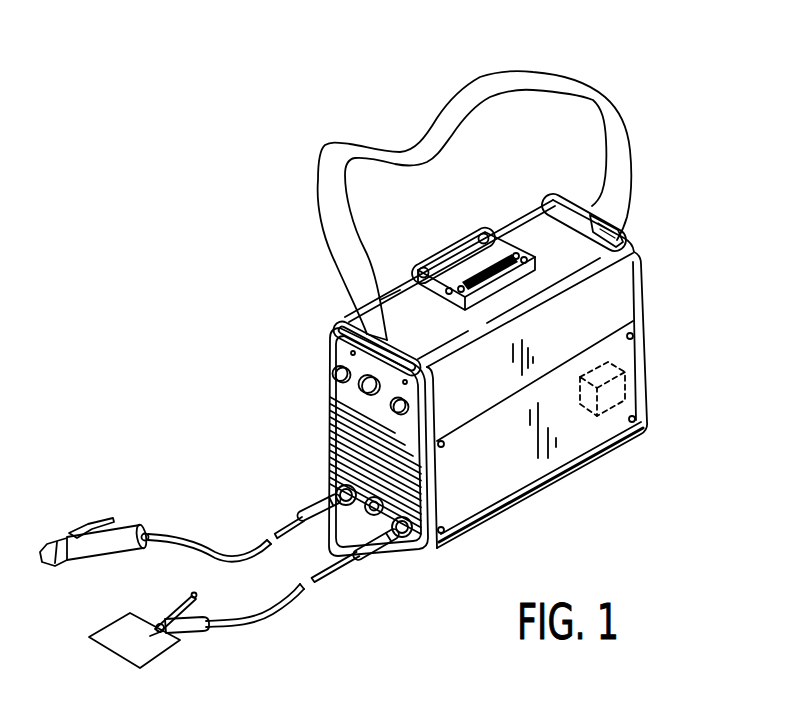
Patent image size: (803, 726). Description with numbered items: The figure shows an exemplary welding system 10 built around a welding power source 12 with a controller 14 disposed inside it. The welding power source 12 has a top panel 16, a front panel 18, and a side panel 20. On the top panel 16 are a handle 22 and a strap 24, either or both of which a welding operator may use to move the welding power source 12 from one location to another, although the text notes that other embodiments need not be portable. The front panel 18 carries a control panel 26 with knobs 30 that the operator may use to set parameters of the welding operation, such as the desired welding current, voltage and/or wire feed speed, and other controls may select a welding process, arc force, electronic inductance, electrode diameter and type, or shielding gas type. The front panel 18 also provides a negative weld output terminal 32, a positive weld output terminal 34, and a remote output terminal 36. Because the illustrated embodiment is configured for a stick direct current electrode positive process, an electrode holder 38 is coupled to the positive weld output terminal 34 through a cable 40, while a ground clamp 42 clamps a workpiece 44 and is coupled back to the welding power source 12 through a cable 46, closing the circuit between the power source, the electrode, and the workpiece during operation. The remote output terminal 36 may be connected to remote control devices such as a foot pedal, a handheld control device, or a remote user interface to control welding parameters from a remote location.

The welding system 10 is at (666, 62).
The welding power source 12 is at (534, 226).
The controller 14 is at (646, 373).
The top panel 16 is at (408, 298).
The front panel 18 is at (333, 352).
The side panel 20 is at (622, 290).
The handle 22 is at (458, 248).
The strap 24 is at (470, 89).
The control panel 26 is at (334, 356).
The knobs 30 is at (382, 388).
The negative weld output terminal 32 is at (405, 552).
The positive weld output terminal 34 is at (327, 487).
The remote output terminal 36 is at (367, 527).
The electrode holder 38 is at (127, 530).
The cable 40 is at (280, 525).
The ground clamp 42 is at (191, 627).
The workpiece 44 is at (113, 632).
The cable 46 is at (297, 593).